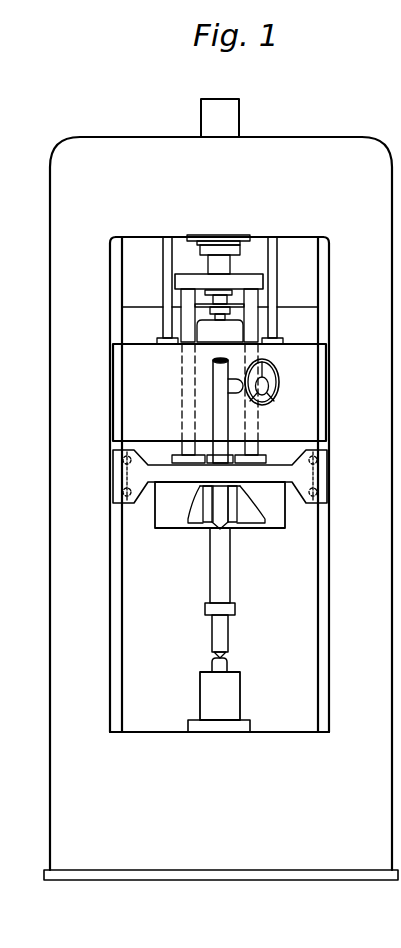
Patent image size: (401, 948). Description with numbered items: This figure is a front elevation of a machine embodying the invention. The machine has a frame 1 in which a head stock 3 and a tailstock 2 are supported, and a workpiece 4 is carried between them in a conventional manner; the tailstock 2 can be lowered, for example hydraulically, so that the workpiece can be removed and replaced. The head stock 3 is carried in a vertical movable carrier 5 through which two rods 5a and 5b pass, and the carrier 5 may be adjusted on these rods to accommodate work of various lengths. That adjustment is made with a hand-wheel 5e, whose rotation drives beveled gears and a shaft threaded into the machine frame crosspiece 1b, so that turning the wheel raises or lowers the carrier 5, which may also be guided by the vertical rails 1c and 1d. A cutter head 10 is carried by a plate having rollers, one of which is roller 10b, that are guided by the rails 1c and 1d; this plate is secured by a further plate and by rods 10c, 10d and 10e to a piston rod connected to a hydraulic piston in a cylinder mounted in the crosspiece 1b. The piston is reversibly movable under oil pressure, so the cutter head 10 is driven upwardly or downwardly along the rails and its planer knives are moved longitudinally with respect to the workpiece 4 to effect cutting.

The frame 1 is at (221, 489).
The machine frame crosspiece 1b is at (268, 153).
The vertical rail 1c is at (118, 301).
The vertical rail 1d is at (320, 260).
The tailstock 2 is at (211, 665).
The head stock 3 is at (208, 524).
The workpiece 4 is at (216, 623).
The vertical movable carrier 5 is at (127, 390).
The rod 5a is at (168, 257).
The rod 5b is at (270, 257).
The hand-wheel 5e is at (280, 374).
The cutter head 10 is at (165, 513).
The roller 10b is at (128, 463).
The rod 10c is at (178, 413).
The rod 10d is at (253, 434).
The rod 10e is at (218, 423).